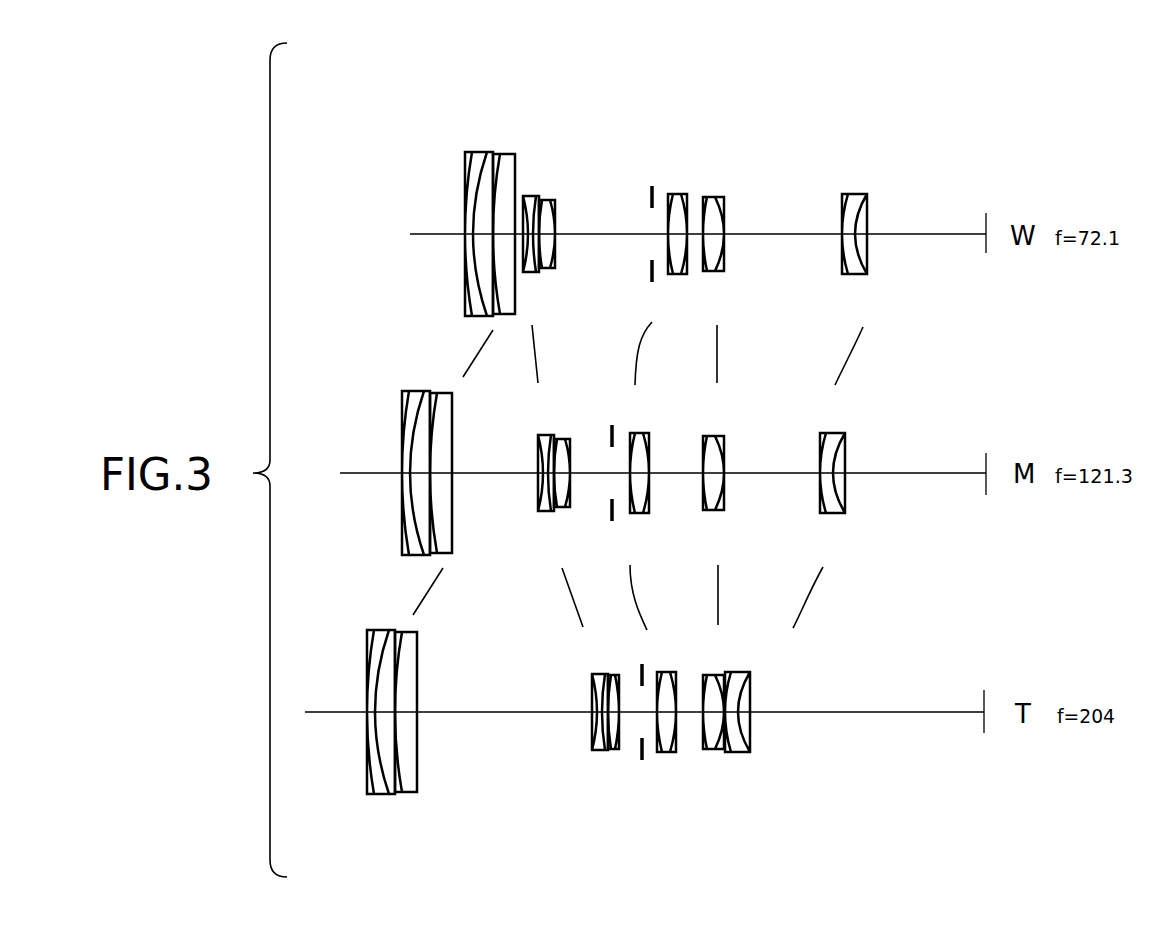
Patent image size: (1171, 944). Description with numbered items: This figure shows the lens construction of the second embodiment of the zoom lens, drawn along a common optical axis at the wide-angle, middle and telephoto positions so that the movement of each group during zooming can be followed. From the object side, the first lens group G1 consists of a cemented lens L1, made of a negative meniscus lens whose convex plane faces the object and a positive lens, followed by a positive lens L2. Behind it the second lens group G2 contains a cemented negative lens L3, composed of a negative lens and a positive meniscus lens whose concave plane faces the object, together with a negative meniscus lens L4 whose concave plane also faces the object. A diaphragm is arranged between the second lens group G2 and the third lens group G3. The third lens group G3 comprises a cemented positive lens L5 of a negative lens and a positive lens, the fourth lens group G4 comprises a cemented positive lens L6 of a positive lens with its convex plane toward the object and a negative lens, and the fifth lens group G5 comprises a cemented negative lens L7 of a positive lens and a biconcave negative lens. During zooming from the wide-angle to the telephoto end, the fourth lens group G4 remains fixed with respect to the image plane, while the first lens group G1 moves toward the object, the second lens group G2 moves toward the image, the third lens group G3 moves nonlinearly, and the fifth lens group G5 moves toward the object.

The first lens group G1 is at (538, 97).
The second lens group G2 is at (607, 148).
The third lens group G3 is at (687, 151).
The fourth lens group G4 is at (742, 151).
The fifth lens group G5 is at (882, 151).
The cemented lens L1 is at (497, 142).
The positive lens L2 is at (504, 152).
The cemented negative lens L3 is at (562, 189).
The negative meniscus lens L4 is at (553, 200).
The cemented positive lens L5 is at (682, 191).
The cemented positive lens L6 is at (737, 191).
The cemented negative lens L7 is at (877, 191).